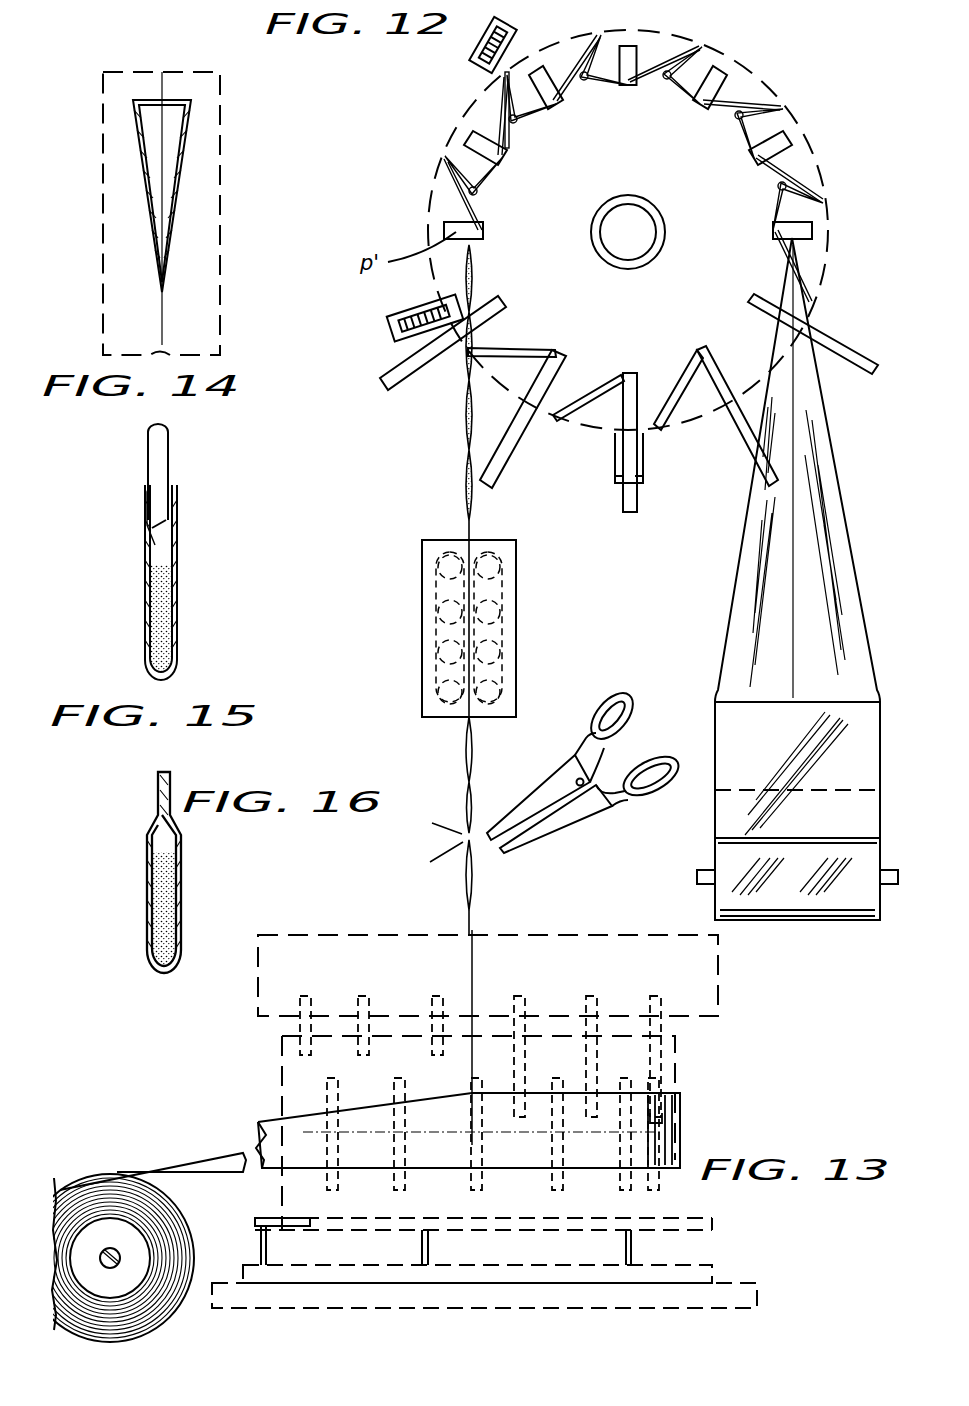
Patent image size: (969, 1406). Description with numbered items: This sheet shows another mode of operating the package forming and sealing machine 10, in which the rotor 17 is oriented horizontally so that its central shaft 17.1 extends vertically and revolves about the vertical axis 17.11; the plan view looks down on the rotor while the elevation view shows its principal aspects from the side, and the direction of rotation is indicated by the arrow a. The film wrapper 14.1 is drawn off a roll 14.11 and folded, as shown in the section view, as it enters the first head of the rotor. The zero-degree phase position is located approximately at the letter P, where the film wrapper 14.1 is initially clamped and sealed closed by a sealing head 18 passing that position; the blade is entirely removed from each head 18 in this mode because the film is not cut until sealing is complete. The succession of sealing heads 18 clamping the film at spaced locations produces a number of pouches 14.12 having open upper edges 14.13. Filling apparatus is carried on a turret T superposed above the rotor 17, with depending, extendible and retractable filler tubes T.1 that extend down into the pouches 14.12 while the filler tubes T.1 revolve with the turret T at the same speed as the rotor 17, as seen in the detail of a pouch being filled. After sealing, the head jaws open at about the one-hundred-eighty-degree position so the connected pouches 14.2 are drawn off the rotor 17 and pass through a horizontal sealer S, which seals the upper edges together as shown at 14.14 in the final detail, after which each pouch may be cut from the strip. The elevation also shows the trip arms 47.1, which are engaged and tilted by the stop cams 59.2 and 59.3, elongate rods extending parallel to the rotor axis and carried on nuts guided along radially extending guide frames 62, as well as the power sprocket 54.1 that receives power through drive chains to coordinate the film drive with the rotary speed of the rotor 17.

In FIG. 12, the package forming and sealing machine 10 is at (808, 104).
In FIG. 12, the turret T is at (822, 148).
In FIG. 13, the turret T is at (718, 1000).
In FIG. 12, the rotor 17 is at (426, 200).
In FIG. 13, the rotor 17 is at (675, 1052).
In FIG. 12, the central shaft 17.1 is at (654, 262).
In FIG. 12, the vertical axis 17.11 is at (632, 226).
In FIG. 13, the vertical axis 17.11 is at (472, 970).
In FIG. 12, the sealing head 18 is at (704, 104).
In FIG. 13, the sealing head 18 is at (470, 1086).
In FIG. 14, the sealing head 18 is at (103, 283).
In FIG. 12, the direction of rotation a is at (582, 140).
In FIG. 12, the 0° phase position P is at (814, 232).
In FIG. 12, the trip arm 47.1 is at (510, 352).
In FIG. 13, the trip arm 47.1 is at (312, 1222).
In FIG. 12, the pouches 14.2 is at (466, 458).
In FIG. 12, the film wrapper 14.1 is at (830, 445).
In FIG. 13, the film wrapper 14.1 is at (262, 1120).
In FIG. 14, the film wrapper 14.1 is at (180, 178).
In FIG. 12, the horizontal sealer S is at (516, 572).
In FIG. 12, the pouch 14.12 is at (733, 95).
In FIG. 13, the pouch 14.12 is at (512, 1162).
In FIG. 15, the pouch 14.12 is at (178, 606).
In FIG. 16, the pouch 14.12 is at (150, 932).
In FIG. 15, the open upper edge 14.13 is at (147, 488).
In FIG. 16, the sealed upper edges 14.14 is at (158, 798).
In FIG. 13, the roll 14.11 is at (117, 1190).
In FIG. 13, the filler tube T.1 is at (355, 1020).
In FIG. 15, the filler tube T.1 is at (158, 443).
In FIG. 13, the power sprocket 54.1 is at (262, 1246).
In FIG. 13, the stop cam 59.2 is at (420, 1255).
In FIG. 13, the stop cam 59.3 is at (620, 1255).
In FIG. 13, the guide frame 62 is at (318, 1275).